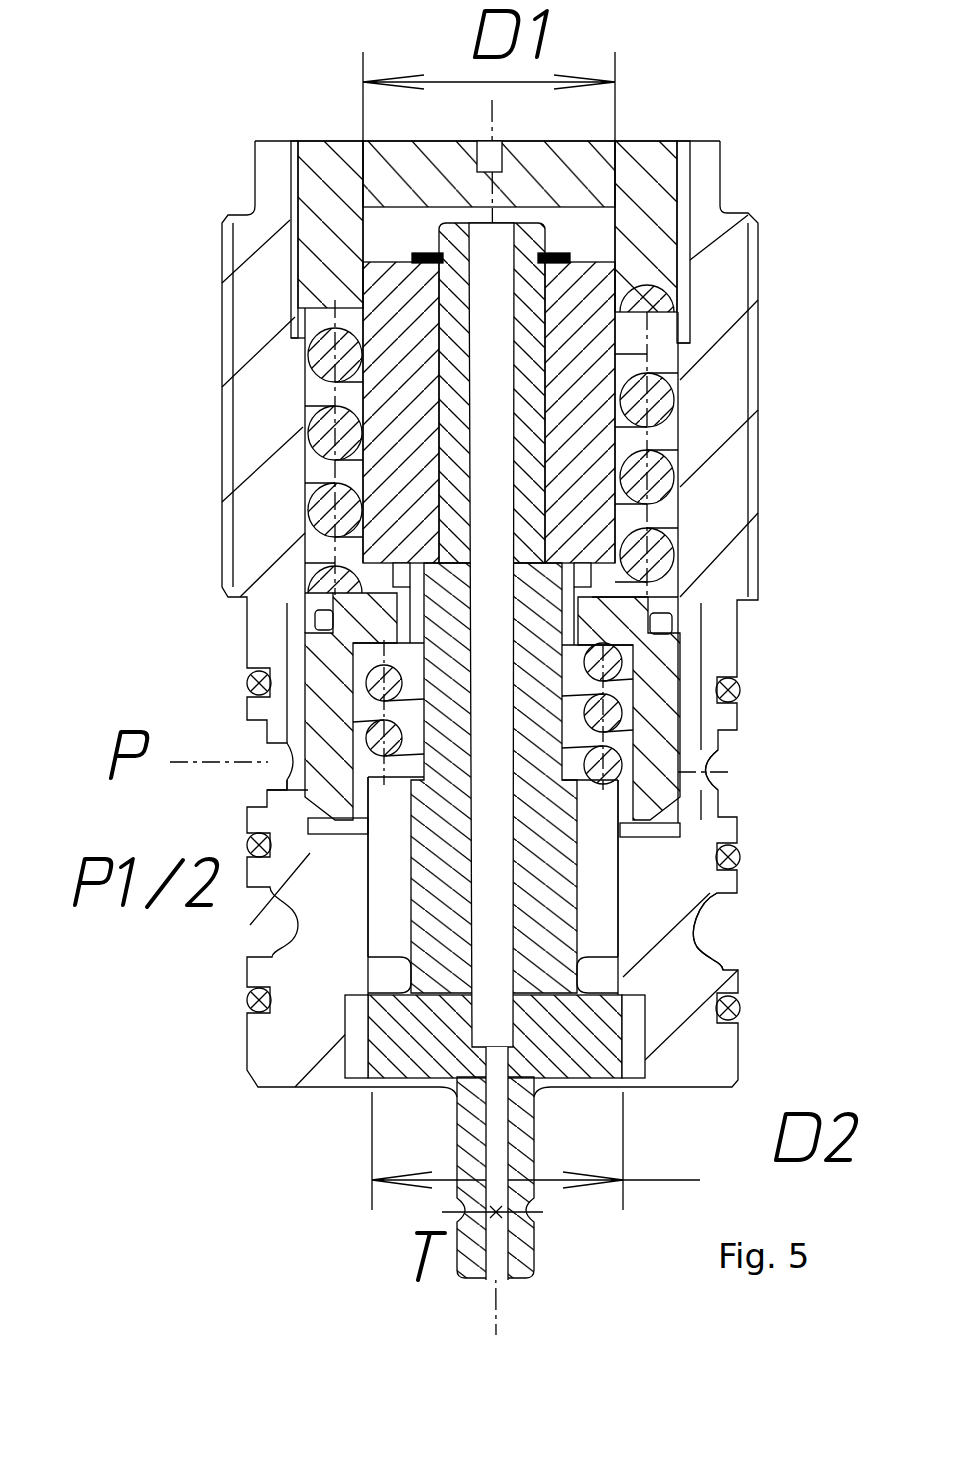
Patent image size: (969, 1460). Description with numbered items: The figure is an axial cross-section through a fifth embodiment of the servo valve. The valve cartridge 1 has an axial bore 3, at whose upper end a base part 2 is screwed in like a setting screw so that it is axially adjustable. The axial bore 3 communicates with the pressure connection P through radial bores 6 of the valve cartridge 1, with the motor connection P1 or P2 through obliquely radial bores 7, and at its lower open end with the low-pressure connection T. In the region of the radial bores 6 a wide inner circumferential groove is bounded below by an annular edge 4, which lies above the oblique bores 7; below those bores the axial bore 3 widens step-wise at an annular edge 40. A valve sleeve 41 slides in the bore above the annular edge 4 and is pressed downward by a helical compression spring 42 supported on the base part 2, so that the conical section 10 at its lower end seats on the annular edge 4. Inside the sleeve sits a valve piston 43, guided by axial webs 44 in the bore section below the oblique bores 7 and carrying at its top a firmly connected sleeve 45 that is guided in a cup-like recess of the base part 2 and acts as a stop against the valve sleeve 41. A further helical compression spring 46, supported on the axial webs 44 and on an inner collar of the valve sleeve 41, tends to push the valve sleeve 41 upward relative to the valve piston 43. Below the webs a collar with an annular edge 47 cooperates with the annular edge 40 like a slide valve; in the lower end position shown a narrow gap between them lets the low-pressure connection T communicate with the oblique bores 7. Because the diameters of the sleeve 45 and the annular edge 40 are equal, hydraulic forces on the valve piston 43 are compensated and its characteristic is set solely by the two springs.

The valve cartridge 1 is at (718, 507).
The base part 2 is at (665, 158).
The axial bore 3 is at (310, 392).
The annular edge 4 is at (308, 800).
The radial bores 6 is at (707, 762).
The obliquely radial bores 7 is at (700, 905).
The conical section 10 is at (308, 818).
The annular edge 40 is at (372, 990).
The valve sleeve 41 is at (668, 697).
The helical compression spring 42 is at (312, 433).
The valve piston 43 is at (560, 905).
The axial webs 44 is at (600, 940).
The sleeve 45 is at (588, 368).
The further helical compression spring 46 is at (385, 690).
The annular edge 47 is at (375, 1023).